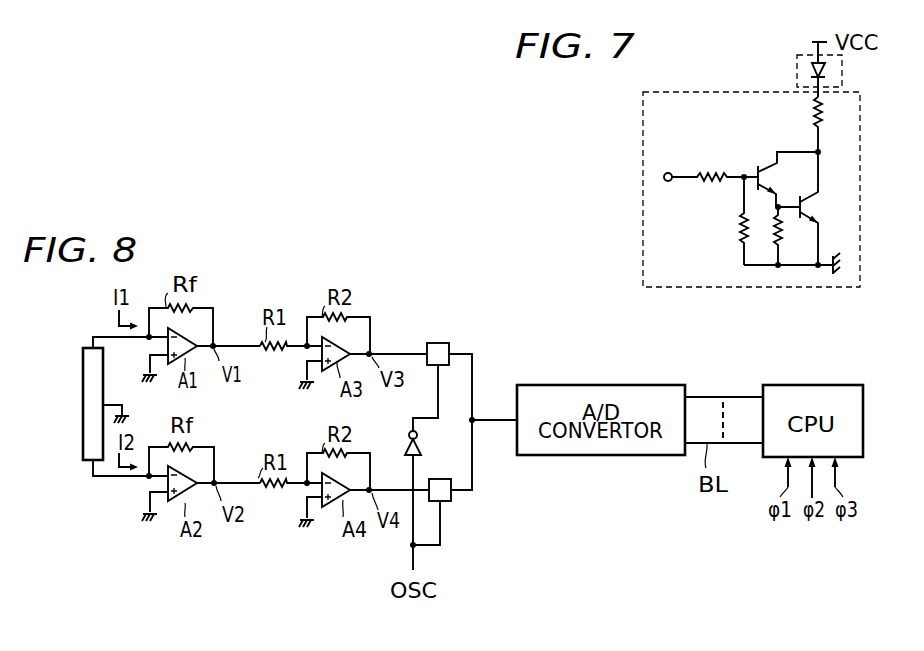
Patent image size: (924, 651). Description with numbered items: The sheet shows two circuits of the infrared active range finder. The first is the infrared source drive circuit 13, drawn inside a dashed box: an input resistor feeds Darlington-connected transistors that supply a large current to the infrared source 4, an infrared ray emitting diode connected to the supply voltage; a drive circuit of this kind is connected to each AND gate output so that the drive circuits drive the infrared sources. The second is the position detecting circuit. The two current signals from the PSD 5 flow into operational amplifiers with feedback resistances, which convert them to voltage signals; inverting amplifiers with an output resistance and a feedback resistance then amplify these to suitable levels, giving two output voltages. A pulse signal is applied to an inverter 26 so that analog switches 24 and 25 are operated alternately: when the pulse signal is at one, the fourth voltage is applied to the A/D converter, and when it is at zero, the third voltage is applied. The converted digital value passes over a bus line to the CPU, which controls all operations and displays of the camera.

In FIG. 7, the infrared source 4 is at (843, 71).
In FIG. 7, the infrared source drive circuit 13 is at (862, 125).
In FIG. 8, the PSD 5 is at (83, 348).
In FIG. 8, the analog switch 24 is at (449, 344).
In FIG. 8, the analog switch 25 is at (438, 479).
In FIG. 8, the inverter 26 is at (419, 447).